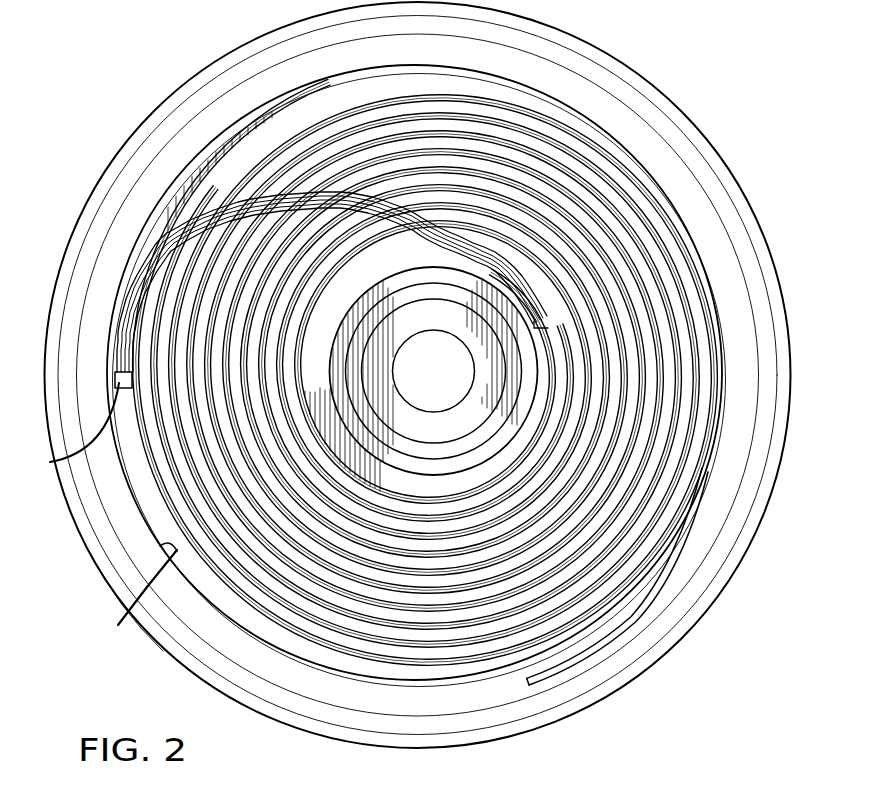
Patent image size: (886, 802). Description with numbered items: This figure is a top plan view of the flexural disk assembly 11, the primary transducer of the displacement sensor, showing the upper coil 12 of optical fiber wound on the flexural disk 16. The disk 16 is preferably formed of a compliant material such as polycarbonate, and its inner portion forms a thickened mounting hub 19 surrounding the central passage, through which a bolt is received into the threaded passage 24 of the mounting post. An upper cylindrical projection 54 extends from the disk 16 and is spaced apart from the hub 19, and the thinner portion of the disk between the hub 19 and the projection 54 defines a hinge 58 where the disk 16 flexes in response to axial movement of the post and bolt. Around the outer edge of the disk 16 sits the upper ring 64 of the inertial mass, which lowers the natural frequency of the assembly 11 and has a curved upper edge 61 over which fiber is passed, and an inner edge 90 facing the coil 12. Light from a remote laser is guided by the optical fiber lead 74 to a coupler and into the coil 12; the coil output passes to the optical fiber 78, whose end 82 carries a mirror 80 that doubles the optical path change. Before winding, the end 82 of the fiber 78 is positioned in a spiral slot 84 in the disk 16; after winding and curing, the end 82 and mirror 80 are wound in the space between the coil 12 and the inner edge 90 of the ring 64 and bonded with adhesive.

The flexural disk assembly 11 is at (640, 672).
The upper coil of optical fiber 12 is at (678, 195).
The flexural disk 16 is at (717, 433).
The mounting hub 19 is at (410, 444).
The threaded passage 24 is at (393, 380).
The upper cylindrical projection 54 is at (510, 405).
The hinge 58 is at (488, 376).
The curved upper edge 61 is at (702, 572).
The upper ring 64 is at (115, 550).
The optical fiber lead 74 is at (633, 623).
The optical fiber 78 is at (132, 317).
The mirror 80 is at (115, 380).
The end of optical fiber 82 is at (51, 462).
The spiral slot 84 is at (148, 277).
The inner edge of upper ring 90 is at (118, 625).